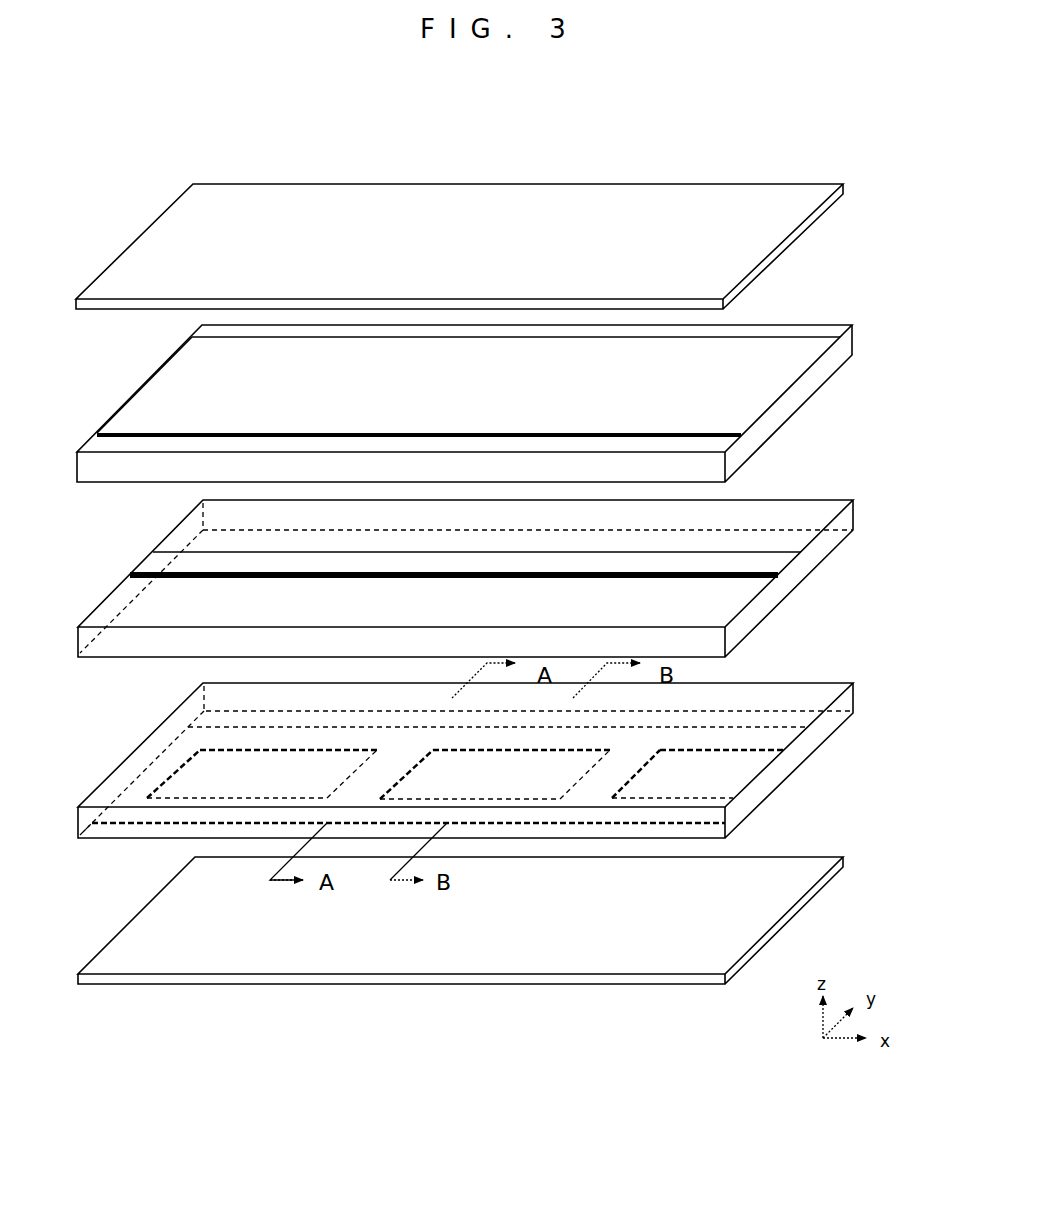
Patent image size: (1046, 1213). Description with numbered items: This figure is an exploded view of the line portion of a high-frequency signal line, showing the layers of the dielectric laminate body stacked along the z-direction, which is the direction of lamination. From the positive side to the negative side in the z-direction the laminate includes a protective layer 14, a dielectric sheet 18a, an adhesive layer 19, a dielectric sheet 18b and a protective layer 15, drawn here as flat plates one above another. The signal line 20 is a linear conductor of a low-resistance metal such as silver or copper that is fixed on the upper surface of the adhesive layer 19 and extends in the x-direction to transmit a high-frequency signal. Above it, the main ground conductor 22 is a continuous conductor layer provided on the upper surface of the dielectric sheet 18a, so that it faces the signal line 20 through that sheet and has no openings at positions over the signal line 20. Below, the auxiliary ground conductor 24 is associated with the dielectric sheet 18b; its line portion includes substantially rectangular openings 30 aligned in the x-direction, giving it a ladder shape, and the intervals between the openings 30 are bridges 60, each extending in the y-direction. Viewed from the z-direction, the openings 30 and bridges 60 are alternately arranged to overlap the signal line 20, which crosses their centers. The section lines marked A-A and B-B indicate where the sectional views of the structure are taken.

The protective layer 14 is at (844, 187).
The main ground conductor 22 is at (770, 350).
The dielectric sheet 18a is at (853, 338).
The signal line 20 is at (198, 562).
The adhesive layer 19 is at (853, 508).
The dielectric sheet 18b is at (853, 690).
The bridges 60 is at (618, 778).
The openings 30 is at (762, 783).
The auxiliary ground conductor 24 is at (740, 808).
The protective layer 15 is at (845, 862).